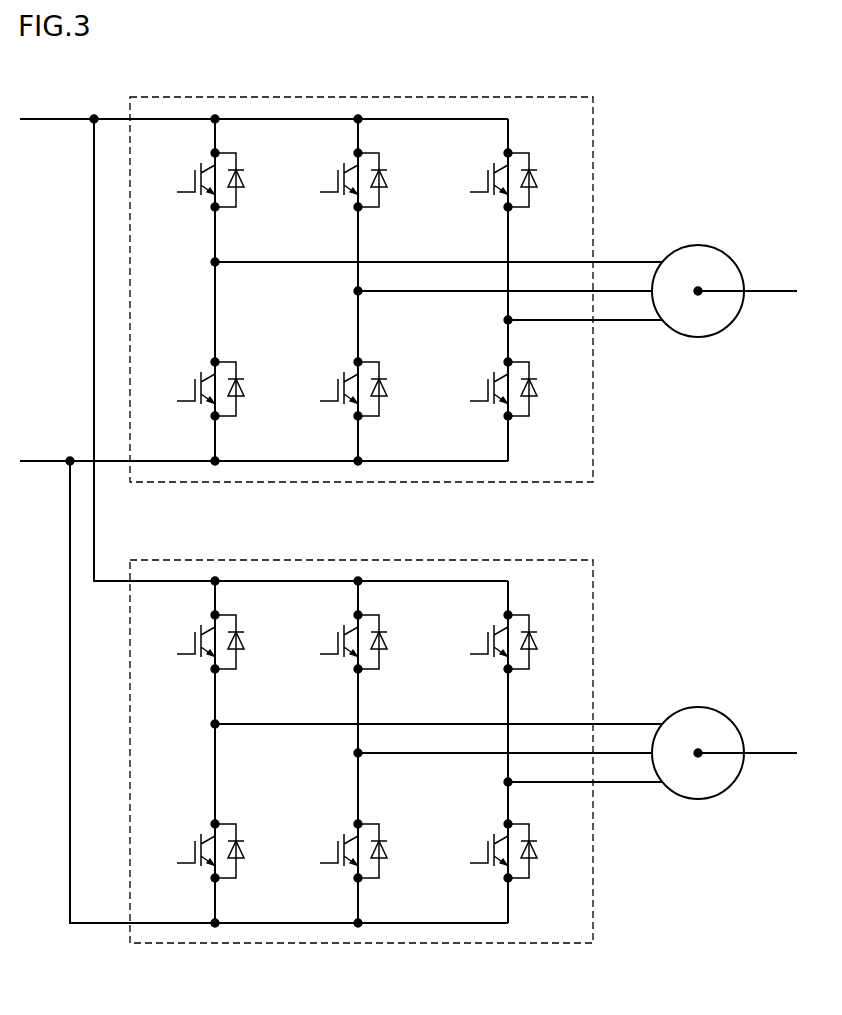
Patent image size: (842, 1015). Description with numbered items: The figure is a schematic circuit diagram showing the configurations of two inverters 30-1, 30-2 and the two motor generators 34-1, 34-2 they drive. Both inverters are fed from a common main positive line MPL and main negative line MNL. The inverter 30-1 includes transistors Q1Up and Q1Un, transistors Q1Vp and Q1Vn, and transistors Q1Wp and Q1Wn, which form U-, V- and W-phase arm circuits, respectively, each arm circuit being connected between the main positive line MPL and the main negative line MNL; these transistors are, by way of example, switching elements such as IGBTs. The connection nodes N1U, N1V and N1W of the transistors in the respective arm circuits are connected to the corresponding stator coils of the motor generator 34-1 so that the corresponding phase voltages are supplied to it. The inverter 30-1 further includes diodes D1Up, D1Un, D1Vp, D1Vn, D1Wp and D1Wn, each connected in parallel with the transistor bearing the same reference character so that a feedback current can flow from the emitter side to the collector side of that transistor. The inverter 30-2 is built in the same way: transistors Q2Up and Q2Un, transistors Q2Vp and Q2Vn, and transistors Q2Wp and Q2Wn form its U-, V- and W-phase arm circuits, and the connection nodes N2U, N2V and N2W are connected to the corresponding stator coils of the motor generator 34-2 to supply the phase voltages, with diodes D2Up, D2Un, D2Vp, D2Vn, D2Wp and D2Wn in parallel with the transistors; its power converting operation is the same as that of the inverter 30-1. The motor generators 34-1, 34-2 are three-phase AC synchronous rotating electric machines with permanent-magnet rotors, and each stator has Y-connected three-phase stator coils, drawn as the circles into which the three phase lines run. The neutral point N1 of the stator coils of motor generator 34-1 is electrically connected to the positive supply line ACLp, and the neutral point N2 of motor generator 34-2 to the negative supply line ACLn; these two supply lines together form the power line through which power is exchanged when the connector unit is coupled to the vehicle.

The main positive line MPL is at (40, 117).
The main negative line MNL is at (40, 459).
The inverter 30-1 is at (511, 97).
The inverter 30-2 is at (512, 560).
The motor generator 34-1 is at (704, 246).
The motor generator 34-2 is at (704, 708).
The neutral point N1 is at (698, 296).
The neutral point N2 is at (698, 758).
The positive supply line ACLp is at (777, 300).
The negative supply line ACLn is at (779, 762).
The connection node N1U is at (218, 262).
The connection node N1V is at (361, 291).
The connection node N1W is at (511, 320).
The connection node N2U is at (218, 724).
The connection node N2V is at (361, 753).
The connection node N2W is at (511, 782).
The transistor Q1Up is at (178, 180).
The transistor Q1Un is at (178, 389).
The transistor Q1Vp is at (322, 180).
The transistor Q1Vn is at (322, 389).
The transistor Q1Wp is at (471, 180).
The transistor Q1Wn is at (471, 389).
The diode D1Up is at (254, 184).
The diode D1Un is at (254, 394).
The diode D1Vp is at (398, 184).
The diode D1Vn is at (398, 394).
The diode D1Wp is at (551, 184).
The diode D1Wn is at (550, 394).
The transistor Q2Up is at (178, 642).
The transistor Q2Un is at (178, 851).
The transistor Q2Vp is at (322, 642).
The transistor Q2Vn is at (322, 851).
The transistor Q2Wp is at (471, 642).
The transistor Q2Wn is at (471, 851).
The diode D2Up is at (254, 646).
The diode D2Un is at (254, 856).
The diode D2Vp is at (398, 646).
The diode D2Vn is at (398, 856).
The diode D2Wp is at (551, 646).
The diode D2Wn is at (550, 856).